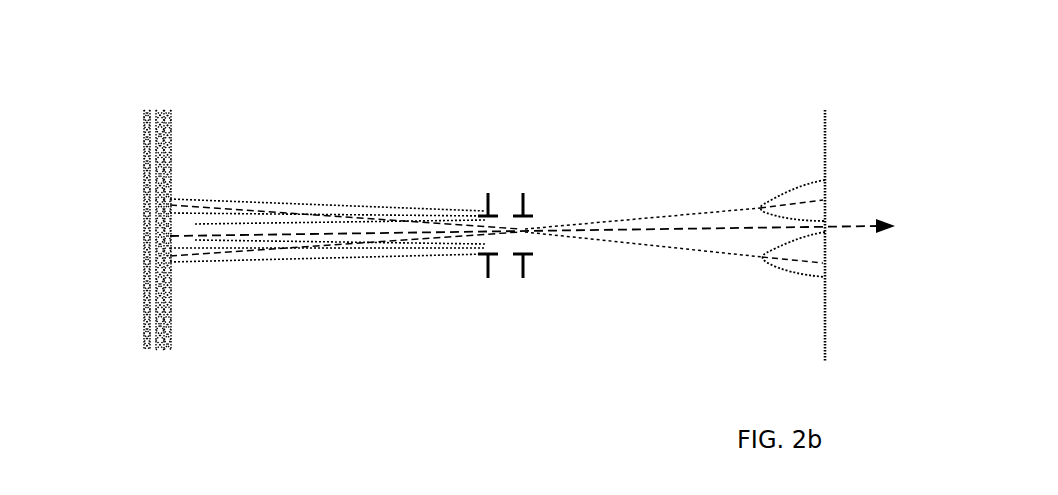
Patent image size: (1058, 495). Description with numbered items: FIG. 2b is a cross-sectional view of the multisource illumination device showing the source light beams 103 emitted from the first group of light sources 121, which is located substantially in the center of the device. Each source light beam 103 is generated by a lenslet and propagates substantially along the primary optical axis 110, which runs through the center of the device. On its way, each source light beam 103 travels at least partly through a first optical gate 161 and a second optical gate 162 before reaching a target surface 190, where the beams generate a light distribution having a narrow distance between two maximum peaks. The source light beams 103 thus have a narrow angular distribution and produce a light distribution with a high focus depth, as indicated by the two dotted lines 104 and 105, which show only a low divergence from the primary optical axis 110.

The first group of light sources 121 is at (160, 205).
The source light beam 103 is at (258, 258).
The first optical gate 161 is at (503, 182).
The second optical gate 162 is at (540, 200).
The dotted line 104 is at (691, 205).
The dotted line 105 is at (672, 260).
The primary optical axis 110 is at (732, 232).
The target surface 190 is at (805, 92).